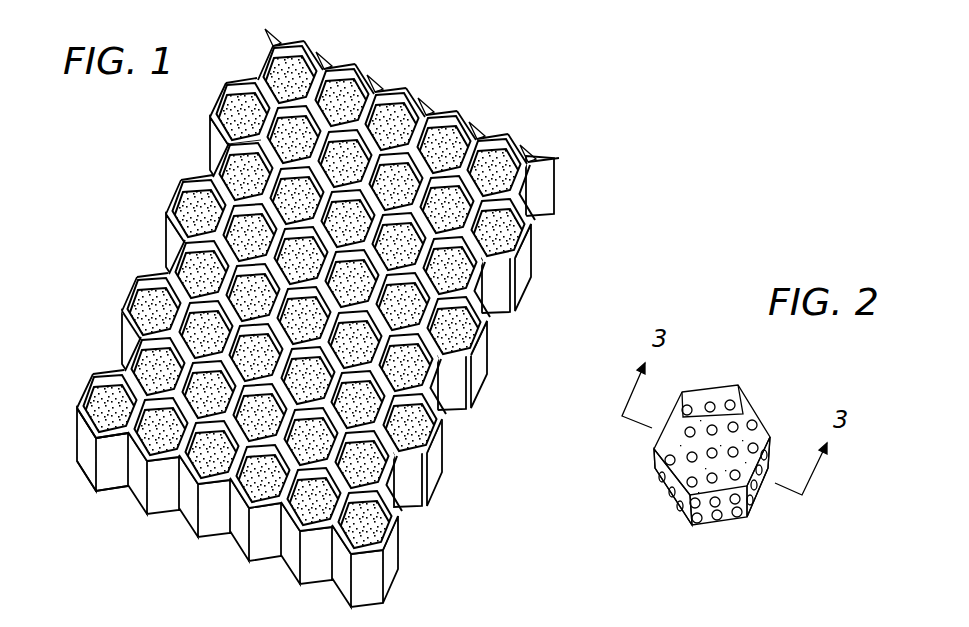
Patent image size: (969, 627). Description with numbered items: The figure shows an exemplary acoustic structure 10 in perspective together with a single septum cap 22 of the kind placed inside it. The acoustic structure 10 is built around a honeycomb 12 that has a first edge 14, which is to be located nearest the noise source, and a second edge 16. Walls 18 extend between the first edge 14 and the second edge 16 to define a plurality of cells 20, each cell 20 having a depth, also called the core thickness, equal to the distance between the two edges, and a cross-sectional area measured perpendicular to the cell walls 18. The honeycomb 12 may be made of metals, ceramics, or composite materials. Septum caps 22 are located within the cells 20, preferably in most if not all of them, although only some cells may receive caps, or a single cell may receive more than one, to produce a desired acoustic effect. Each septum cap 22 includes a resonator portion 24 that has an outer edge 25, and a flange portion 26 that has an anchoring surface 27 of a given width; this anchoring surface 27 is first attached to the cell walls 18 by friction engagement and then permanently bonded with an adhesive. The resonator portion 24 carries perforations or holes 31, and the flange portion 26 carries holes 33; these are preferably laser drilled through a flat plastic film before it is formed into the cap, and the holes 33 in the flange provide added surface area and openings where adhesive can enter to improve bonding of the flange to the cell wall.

In FIG. 1, the acoustic structure 10 is at (343, 310).
In FIG. 1, the honeycomb 12 is at (298, 310).
In FIG. 1, the first edge 14 is at (80, 425).
In FIG. 1, the second edge 16 is at (87, 480).
In FIG. 1, the walls 18 is at (235, 155).
In FIG. 1, the cells 20 is at (335, 73).
In FIG. 1, the septum cap 22 is at (388, 537).
In FIG. 2, the septum cap 22 is at (716, 457).
In FIG. 2, the resonator portion 24 is at (726, 408).
In FIG. 2, the outer edge 25 is at (670, 500).
In FIG. 2, the flange portion 26 is at (711, 542).
In FIG. 2, the anchoring surface 27 is at (753, 498).
In FIG. 2, the perforations or holes 31 is at (733, 422).
In FIG. 2, the holes 33 is at (693, 523).